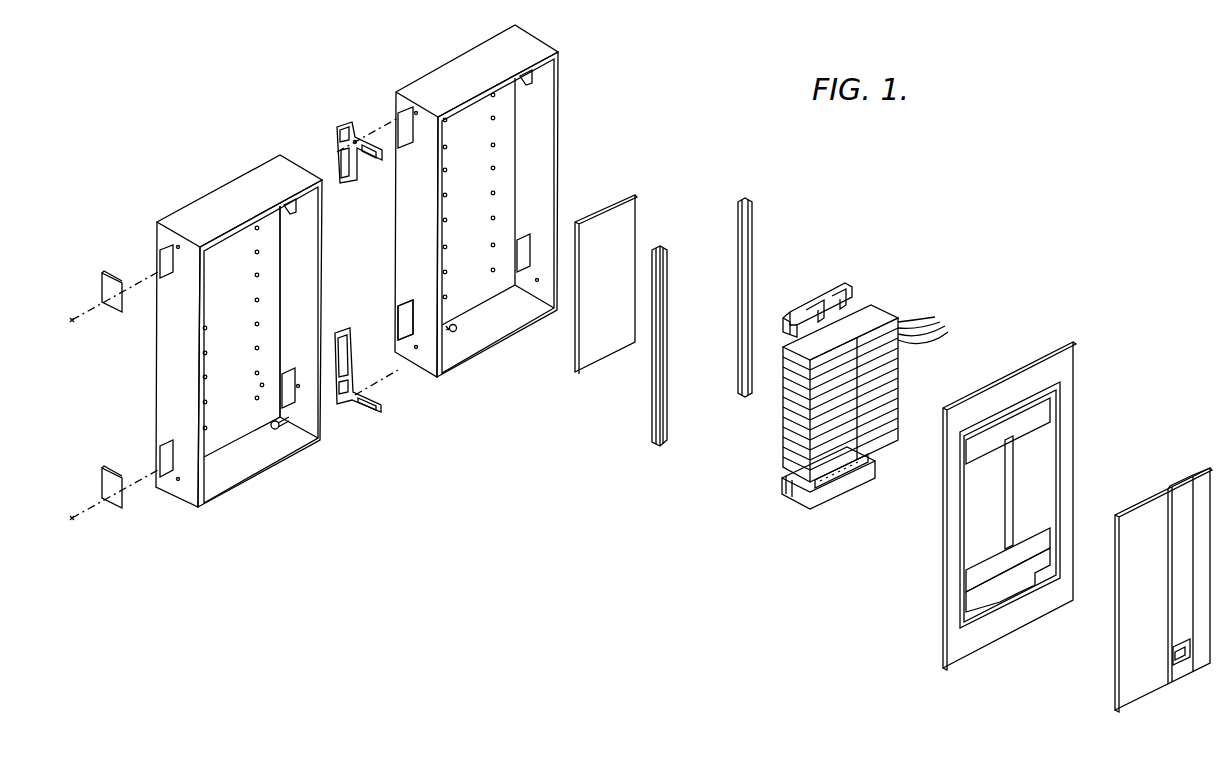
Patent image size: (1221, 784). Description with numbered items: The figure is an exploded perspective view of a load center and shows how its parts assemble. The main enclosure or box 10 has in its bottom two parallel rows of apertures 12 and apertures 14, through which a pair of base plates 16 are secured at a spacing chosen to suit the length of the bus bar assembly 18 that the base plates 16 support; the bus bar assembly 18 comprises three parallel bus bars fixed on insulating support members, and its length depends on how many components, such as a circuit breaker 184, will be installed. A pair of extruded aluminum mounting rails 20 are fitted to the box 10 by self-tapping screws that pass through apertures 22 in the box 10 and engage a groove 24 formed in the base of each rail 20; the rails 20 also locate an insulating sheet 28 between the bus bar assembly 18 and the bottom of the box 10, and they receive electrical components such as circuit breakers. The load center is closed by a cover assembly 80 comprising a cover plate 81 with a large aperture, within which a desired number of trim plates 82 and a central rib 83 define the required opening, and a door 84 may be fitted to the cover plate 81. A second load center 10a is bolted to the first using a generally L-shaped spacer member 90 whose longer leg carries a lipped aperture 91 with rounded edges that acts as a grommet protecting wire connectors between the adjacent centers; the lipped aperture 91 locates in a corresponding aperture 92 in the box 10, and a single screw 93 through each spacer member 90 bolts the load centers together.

The enclosure or box 10 is at (563, 50).
The second load center 10a is at (197, 187).
The apertures 12 is at (205, 305).
The apertures 14 is at (256, 372).
The base plates 16 is at (790, 310).
The bus bar assembly 18 is at (777, 347).
The mounting rails 20 is at (738, 300).
The apertures 22 is at (498, 252).
The groove 24 is at (742, 200).
The insulating sheet 28 is at (630, 200).
The cover assembly 80 is at (932, 418).
The cover plate 81 is at (940, 512).
The trim plates 82 is at (1045, 558).
The central rib 83 is at (1005, 497).
The door 84 is at (1115, 632).
The spacer member 90 is at (383, 398).
The lipped aperture 91 is at (351, 340).
The aperture 92 is at (398, 320).
The screw 93 is at (282, 432).
The circuit breaker 184 is at (930, 321).